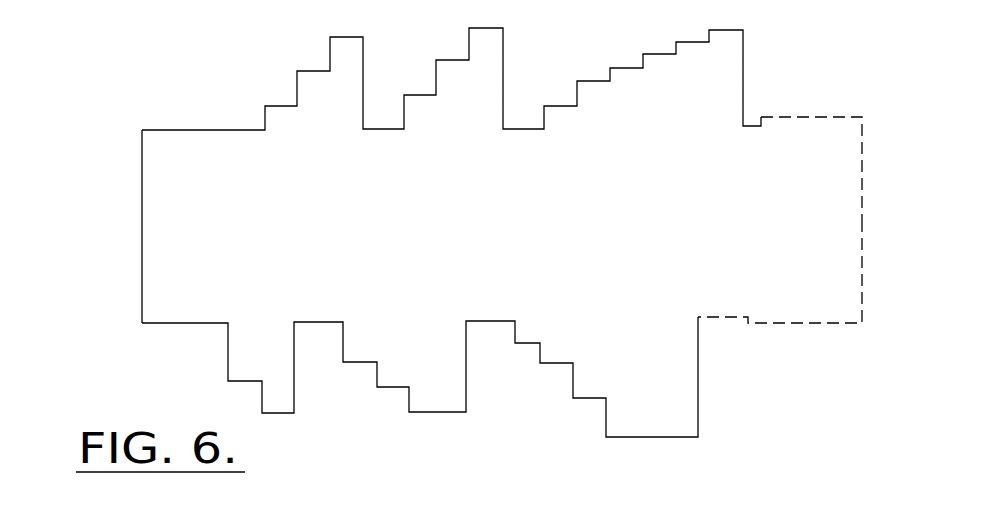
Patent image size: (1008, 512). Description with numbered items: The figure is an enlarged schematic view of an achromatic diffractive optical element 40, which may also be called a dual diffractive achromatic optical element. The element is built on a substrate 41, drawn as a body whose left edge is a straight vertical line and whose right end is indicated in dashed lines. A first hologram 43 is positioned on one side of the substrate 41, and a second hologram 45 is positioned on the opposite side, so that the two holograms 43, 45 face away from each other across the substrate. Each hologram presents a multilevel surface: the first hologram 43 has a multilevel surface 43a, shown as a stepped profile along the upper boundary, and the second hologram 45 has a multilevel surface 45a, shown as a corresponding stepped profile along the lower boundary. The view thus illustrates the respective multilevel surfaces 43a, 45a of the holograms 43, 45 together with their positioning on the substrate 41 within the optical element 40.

The achromatic diffractive optical element 40 is at (462, 232).
The substrate 41 is at (152, 226).
The first hologram 43 is at (811, 134).
The multilevel surface 43a is at (451, 79).
The second hologram 45 is at (780, 312).
The multilevel surface 45a is at (414, 377).